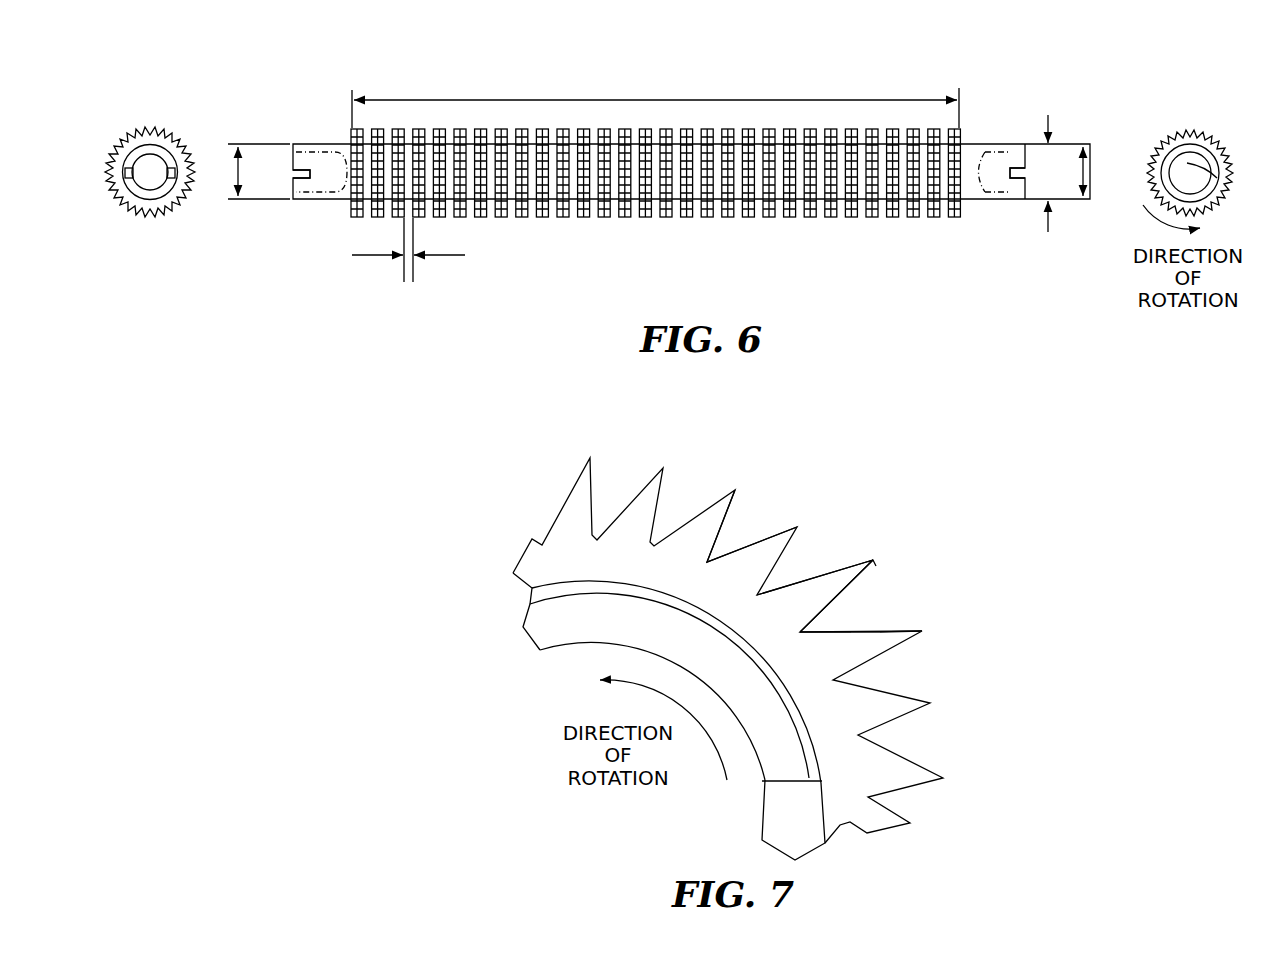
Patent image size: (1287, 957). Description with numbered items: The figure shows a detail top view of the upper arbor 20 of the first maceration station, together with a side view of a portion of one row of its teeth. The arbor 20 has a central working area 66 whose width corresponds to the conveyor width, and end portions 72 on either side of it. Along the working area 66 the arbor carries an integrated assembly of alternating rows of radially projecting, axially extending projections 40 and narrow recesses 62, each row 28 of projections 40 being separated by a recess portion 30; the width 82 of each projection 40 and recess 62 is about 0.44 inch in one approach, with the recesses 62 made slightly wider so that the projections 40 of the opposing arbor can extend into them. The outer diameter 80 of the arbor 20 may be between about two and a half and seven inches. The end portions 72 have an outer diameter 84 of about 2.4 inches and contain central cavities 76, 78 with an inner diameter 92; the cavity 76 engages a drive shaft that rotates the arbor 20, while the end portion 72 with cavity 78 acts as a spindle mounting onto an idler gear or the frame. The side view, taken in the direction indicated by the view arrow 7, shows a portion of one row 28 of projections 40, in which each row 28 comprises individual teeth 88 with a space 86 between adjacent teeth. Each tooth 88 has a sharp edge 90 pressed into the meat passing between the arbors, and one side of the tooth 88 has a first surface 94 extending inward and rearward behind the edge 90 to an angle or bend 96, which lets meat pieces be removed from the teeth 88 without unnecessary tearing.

In FIG. 6, the upper arbor 20 is at (960, 68).
In FIG. 6, the central working area 66 is at (658, 99).
In FIG. 6, the end portion 72 is at (322, 140).
In FIG. 6, the outer diameter of end portion 84 is at (236, 170).
In FIG. 6, the central cavity 76 is at (323, 178).
In FIG. 6, the width of projection and recess 82 is at (409, 262).
In FIG. 6, the recess 62 is at (574, 222).
In FIG. 6, the projection 40 is at (667, 222).
In FIG. 7, the projection 40 is at (777, 530).
In FIG. 6, the recess portion 30 is at (778, 222).
In FIG. 6, the row of projections 28 is at (870, 222).
In FIG. 6, the central cavity 78 is at (1001, 183).
In FIG. 6, the outer diameter 80 is at (1088, 168).
In FIG. 6, the inner diameter 92 is at (1048, 173).
In FIG. 6, the view direction 7 is at (1246, 165).
In FIG. 7, the space 86 is at (805, 556).
In FIG. 7, the tooth 88 is at (866, 566).
In FIG. 7, the angle or bend 96 is at (851, 627).
In FIG. 7, the first surface 94 is at (878, 633).
In FIG. 7, the sharp edge 90 is at (900, 637).